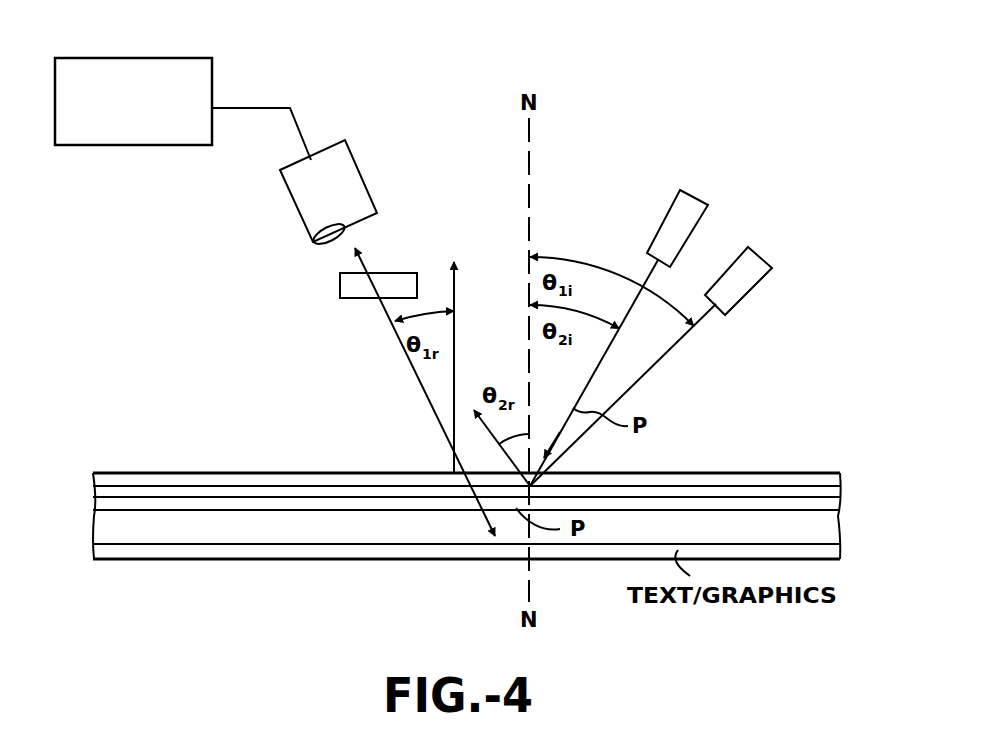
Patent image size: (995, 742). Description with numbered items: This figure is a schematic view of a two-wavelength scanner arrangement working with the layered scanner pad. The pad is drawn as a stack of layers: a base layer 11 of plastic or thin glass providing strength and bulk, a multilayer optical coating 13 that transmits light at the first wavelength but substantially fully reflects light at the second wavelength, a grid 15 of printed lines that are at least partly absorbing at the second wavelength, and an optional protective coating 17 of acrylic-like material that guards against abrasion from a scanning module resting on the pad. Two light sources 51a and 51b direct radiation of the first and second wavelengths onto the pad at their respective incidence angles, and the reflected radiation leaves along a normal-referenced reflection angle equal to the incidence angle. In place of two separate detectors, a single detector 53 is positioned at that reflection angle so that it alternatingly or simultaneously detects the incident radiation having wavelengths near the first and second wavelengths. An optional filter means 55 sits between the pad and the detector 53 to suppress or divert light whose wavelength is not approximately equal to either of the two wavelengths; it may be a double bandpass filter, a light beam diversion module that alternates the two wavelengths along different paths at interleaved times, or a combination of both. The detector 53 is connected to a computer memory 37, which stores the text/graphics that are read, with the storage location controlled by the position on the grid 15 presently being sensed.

The base layer 11 is at (830, 532).
The multilayer optical coating 13 is at (827, 503).
The grid 15 is at (833, 491).
The protective coating 17 is at (763, 478).
The computer memory 37 is at (157, 137).
The light source 51a is at (752, 264).
The light source 51b is at (685, 207).
The detector 53 is at (350, 172).
The filter means 55 is at (353, 288).